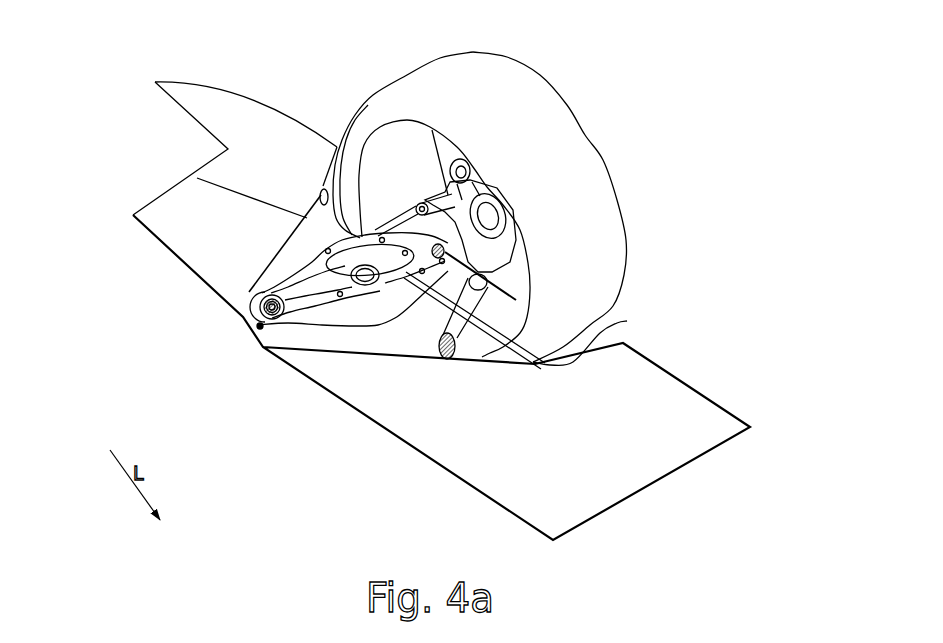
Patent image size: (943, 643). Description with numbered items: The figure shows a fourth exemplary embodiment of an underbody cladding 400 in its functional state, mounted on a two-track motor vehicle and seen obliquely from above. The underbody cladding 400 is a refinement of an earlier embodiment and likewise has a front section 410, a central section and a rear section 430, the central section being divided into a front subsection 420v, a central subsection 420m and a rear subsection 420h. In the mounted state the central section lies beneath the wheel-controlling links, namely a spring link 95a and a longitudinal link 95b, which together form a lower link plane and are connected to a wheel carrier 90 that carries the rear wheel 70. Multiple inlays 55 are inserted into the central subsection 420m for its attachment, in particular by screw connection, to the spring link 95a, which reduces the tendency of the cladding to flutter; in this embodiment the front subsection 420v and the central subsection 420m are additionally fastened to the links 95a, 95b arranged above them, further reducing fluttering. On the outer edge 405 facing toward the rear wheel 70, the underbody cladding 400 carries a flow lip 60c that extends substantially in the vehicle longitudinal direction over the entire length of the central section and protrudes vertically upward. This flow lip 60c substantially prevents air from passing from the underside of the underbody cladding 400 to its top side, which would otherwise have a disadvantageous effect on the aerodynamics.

The underbody cladding 400 is at (453, 282).
The front section 410 is at (577, 477).
The rear section 430 is at (187, 88).
The outer edge 405 is at (323, 186).
The flow lip 60c is at (321, 190).
The rear wheel 70 is at (551, 174).
The wheel carrier 90 is at (464, 160).
The spring link 95a is at (374, 230).
The longitudinal link 95b is at (495, 286).
The inlays 55 is at (347, 283).
The rear subsection 420h is at (257, 277).
The central subsection 420m is at (262, 326).
The front subsection 420v is at (348, 300).